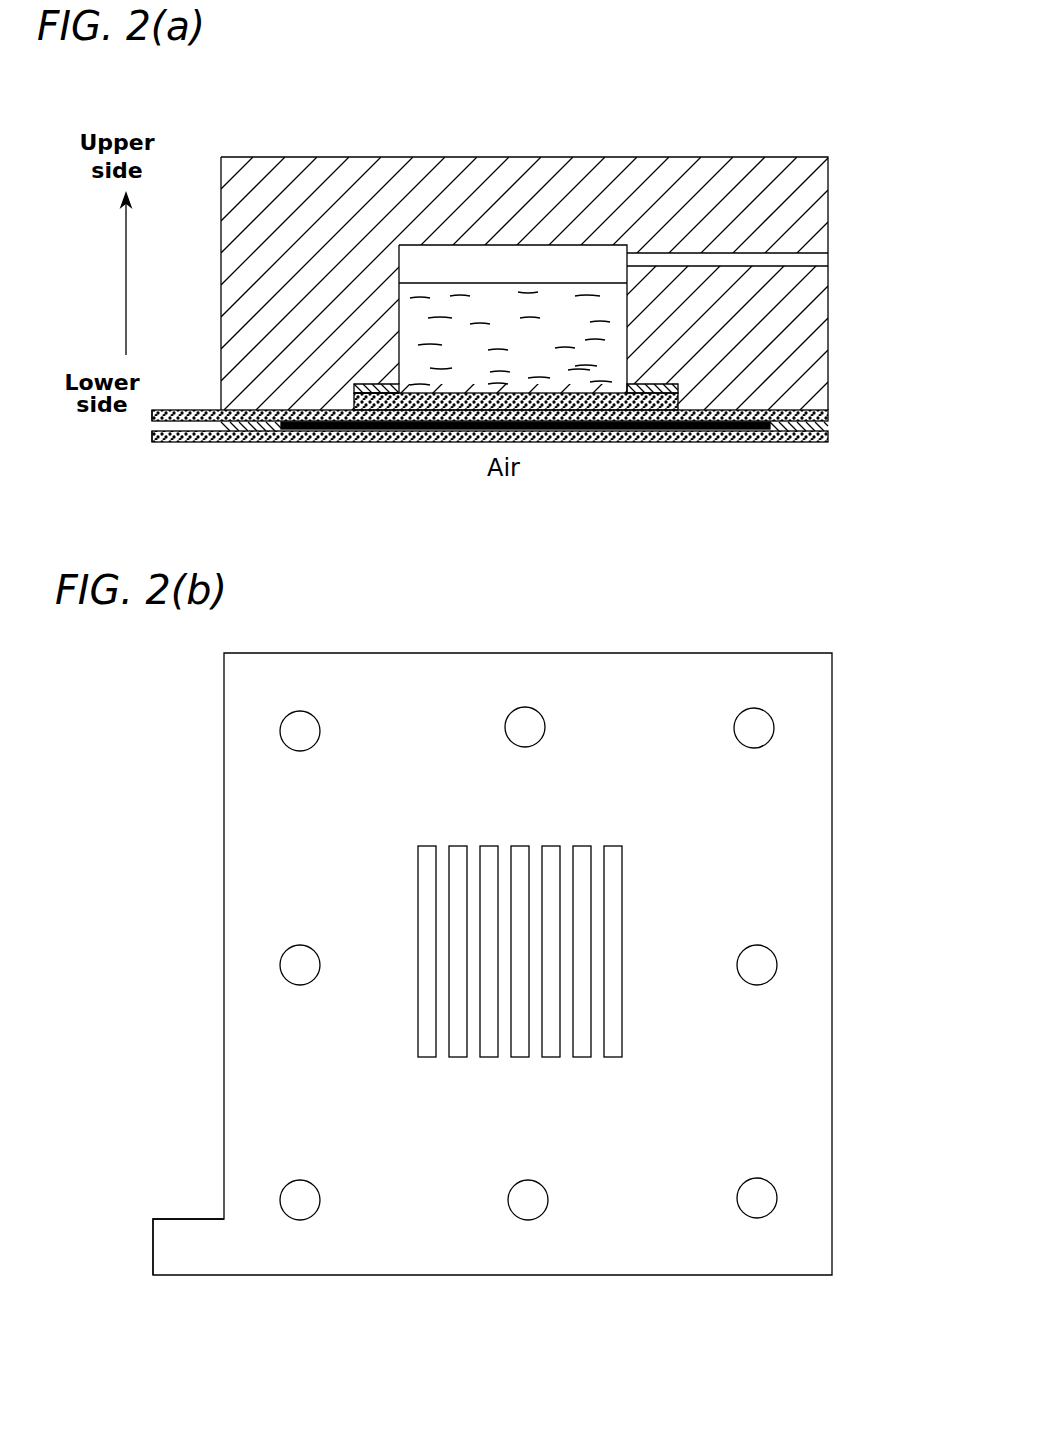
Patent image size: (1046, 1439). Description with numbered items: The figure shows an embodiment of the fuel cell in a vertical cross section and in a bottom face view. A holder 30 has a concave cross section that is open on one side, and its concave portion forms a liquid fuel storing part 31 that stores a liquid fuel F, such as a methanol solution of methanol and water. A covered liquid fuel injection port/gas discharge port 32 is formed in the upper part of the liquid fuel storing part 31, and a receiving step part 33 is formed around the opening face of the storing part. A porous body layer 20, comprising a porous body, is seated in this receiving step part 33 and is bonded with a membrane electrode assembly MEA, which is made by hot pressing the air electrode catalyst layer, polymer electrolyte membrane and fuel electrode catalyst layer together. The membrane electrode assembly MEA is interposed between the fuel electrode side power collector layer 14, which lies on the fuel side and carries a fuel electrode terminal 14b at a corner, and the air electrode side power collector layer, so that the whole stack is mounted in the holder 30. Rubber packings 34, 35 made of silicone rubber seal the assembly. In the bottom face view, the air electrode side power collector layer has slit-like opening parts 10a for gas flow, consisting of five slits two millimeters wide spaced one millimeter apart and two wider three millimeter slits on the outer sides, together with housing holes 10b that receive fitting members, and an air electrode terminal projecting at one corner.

The holder 30 is at (778, 152).
The liquid fuel storing part 31 is at (553, 258).
The liquid fuel injection port/gas discharge port 32 is at (820, 262).
The receiving step part 33 is at (377, 395).
The rubber packing 34 is at (680, 388).
The rubber packing 35 is at (251, 428).
The porous body layer 20 is at (678, 402).
The fuel electrode side power collector layer 14 is at (828, 413).
The fuel electrode terminal 14b is at (200, 412).
The slit-like opening parts 10a is at (617, 1000).
The housing holes 10b is at (745, 710).
The liquid fuel F is at (460, 345).
The membrane electrode assembly MEA is at (777, 433).